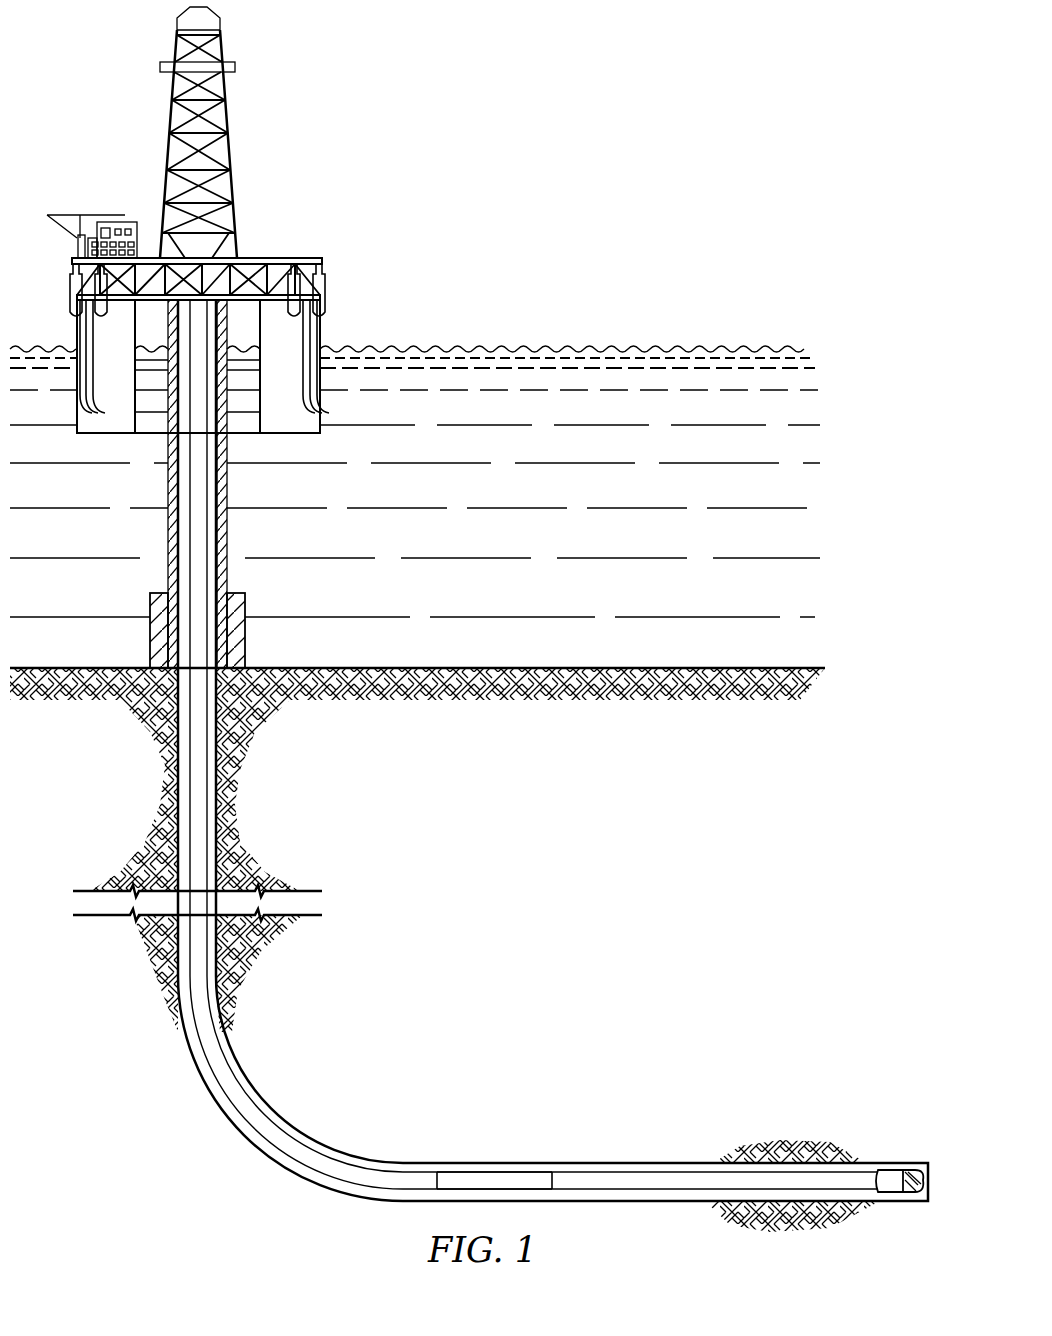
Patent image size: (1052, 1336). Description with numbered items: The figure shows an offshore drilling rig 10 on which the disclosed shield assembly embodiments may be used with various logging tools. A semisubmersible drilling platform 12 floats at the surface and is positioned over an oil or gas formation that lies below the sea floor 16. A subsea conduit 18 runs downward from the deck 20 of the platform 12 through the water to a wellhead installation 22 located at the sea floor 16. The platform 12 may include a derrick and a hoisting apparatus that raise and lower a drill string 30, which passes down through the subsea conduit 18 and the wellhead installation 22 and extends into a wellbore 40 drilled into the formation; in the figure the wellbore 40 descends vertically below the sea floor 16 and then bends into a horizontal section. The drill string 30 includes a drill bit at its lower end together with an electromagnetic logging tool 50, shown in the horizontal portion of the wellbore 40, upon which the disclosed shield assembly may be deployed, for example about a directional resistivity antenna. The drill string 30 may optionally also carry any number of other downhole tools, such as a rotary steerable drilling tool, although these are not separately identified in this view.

The drilling rig 10 is at (328, 129).
The semisubmersible drilling platform 12 is at (303, 258).
The sea floor 16 is at (478, 667).
The subsea conduit 18 is at (227, 533).
The deck 20 is at (325, 300).
The wellhead installation 22 is at (240, 593).
The drill string 30 is at (197, 452).
The wellbore 40 is at (172, 788).
The electromagnetic logging tool 50 is at (492, 1178).